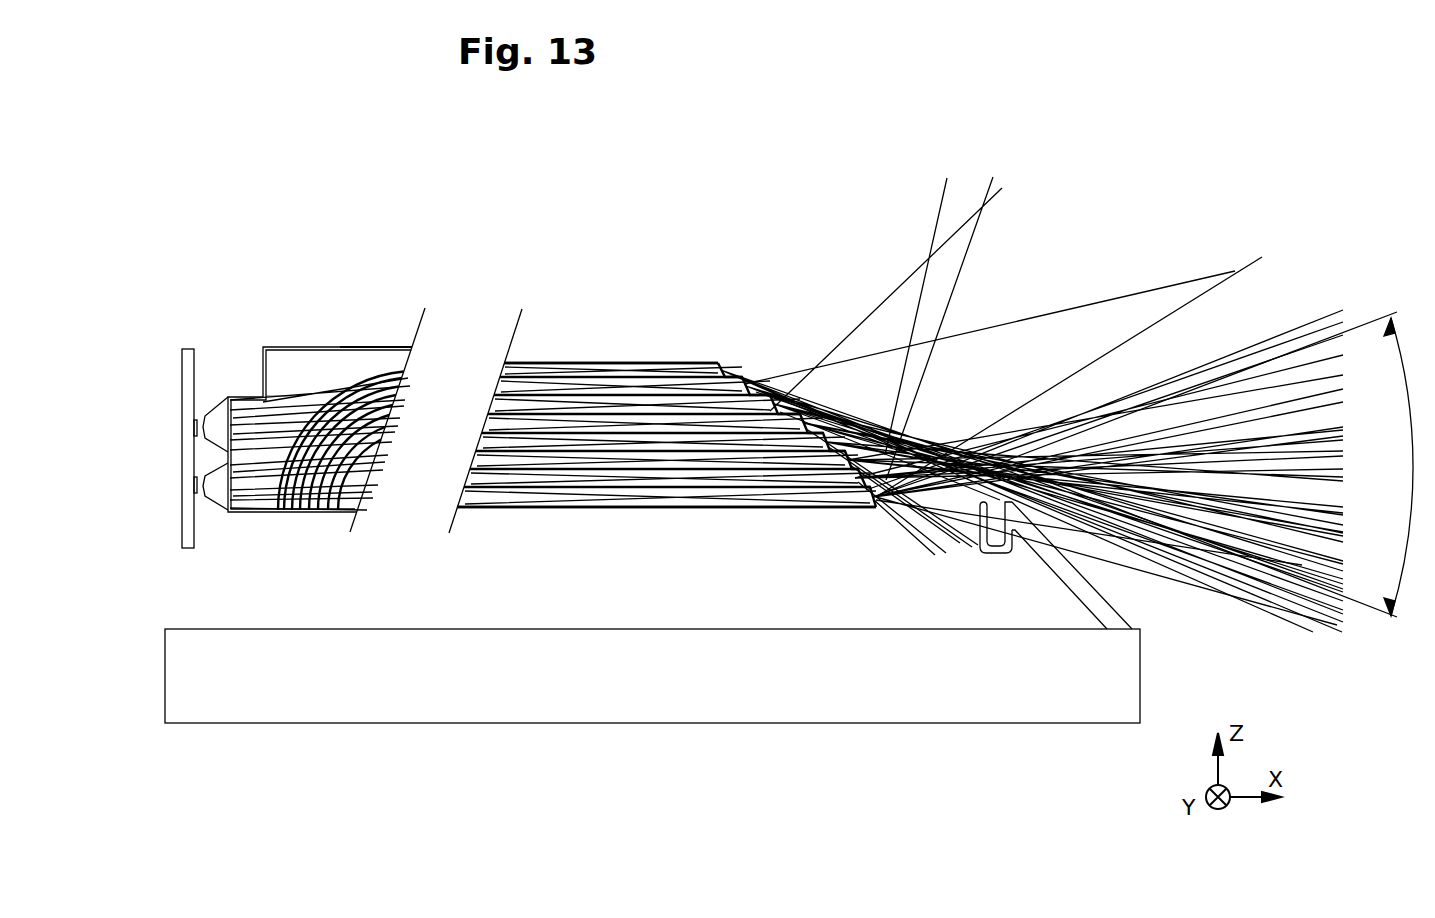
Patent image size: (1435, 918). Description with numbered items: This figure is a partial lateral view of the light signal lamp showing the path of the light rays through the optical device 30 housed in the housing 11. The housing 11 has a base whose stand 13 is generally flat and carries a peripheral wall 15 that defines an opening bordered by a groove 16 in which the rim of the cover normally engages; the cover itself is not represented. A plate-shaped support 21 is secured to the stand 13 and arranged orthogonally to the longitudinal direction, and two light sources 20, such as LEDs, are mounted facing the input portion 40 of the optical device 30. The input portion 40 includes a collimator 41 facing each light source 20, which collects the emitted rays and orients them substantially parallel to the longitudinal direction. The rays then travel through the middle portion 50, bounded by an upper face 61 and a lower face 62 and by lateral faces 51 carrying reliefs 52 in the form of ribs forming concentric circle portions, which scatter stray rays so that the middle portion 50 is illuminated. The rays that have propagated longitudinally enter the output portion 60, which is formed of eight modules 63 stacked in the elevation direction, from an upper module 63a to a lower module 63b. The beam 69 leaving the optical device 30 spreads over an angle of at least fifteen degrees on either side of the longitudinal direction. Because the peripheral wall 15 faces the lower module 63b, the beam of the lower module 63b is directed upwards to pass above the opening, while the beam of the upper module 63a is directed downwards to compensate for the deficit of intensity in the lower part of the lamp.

The housing 11 is at (389, 737).
The stand 13 is at (498, 680).
The peripheral wall 15 is at (1098, 601).
The groove 16 is at (999, 555).
The light source 20 is at (193, 428).
The support 21 is at (187, 382).
The optical device 30 is at (345, 336).
The input portion 40 is at (207, 548).
The collimator 41 is at (213, 422).
The middle portion 50 is at (529, 540).
The lateral face 51 is at (299, 370).
The reliefs 52 is at (368, 370).
The output portion 60 is at (762, 545).
The upper face 61 is at (287, 345).
The lower face 62 is at (294, 508).
The module 63 is at (683, 437).
The upper module 63a is at (666, 362).
The lower module 63b is at (820, 512).
The beam 69 is at (1243, 528).